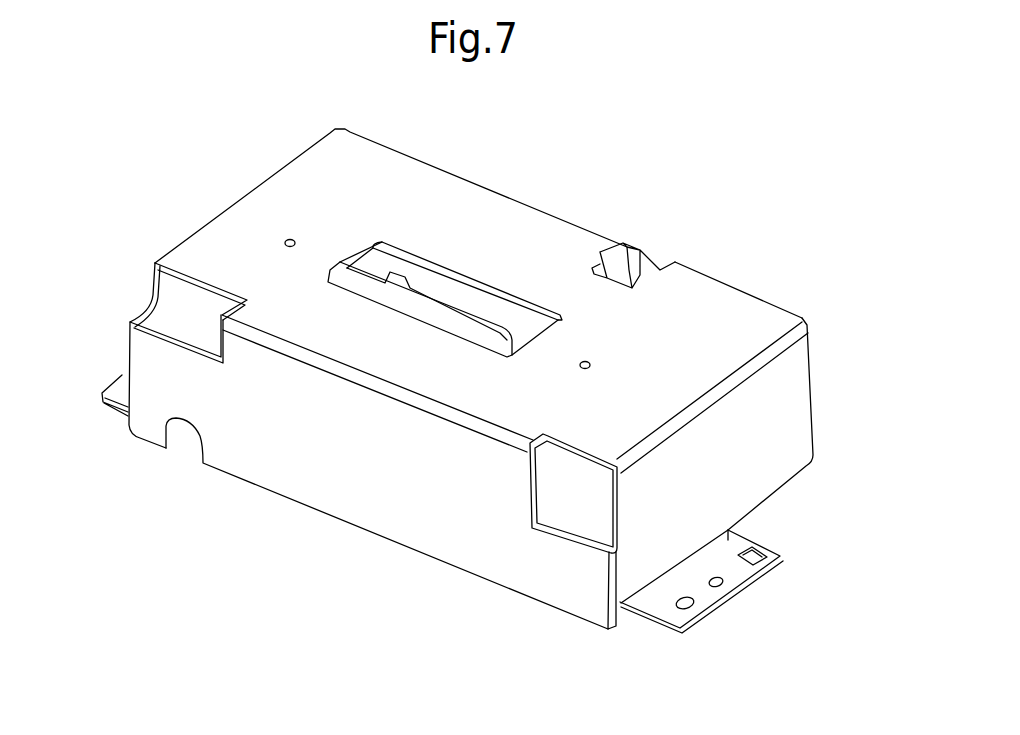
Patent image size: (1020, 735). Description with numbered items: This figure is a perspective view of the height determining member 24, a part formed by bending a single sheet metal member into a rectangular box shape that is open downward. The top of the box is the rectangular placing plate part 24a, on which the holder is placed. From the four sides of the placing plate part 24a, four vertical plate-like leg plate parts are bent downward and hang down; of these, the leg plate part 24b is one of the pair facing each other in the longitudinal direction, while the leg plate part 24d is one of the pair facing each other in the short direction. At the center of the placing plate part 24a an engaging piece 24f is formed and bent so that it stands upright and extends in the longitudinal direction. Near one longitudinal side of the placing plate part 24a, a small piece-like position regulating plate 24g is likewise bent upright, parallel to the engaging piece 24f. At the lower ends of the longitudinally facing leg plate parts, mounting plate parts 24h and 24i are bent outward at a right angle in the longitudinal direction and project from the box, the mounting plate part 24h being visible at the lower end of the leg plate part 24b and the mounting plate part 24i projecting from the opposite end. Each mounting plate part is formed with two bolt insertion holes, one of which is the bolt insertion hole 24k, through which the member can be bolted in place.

The height determining member 24 is at (307, 111).
The placing plate part 24a is at (270, 222).
The leg plate part 24b is at (778, 405).
The leg plate part 24d is at (343, 445).
The engaging piece 24f is at (382, 287).
The position regulating plate 24g is at (633, 247).
The mounting plate part 24h is at (745, 591).
The mounting plate part 24i is at (118, 393).
The bolt insertion hole 24k is at (682, 600).